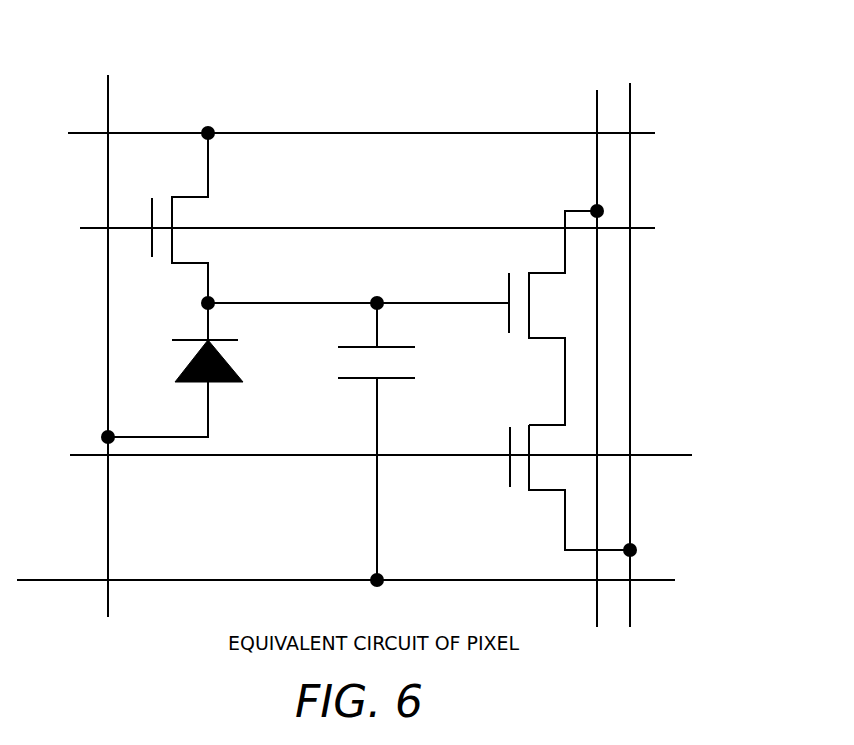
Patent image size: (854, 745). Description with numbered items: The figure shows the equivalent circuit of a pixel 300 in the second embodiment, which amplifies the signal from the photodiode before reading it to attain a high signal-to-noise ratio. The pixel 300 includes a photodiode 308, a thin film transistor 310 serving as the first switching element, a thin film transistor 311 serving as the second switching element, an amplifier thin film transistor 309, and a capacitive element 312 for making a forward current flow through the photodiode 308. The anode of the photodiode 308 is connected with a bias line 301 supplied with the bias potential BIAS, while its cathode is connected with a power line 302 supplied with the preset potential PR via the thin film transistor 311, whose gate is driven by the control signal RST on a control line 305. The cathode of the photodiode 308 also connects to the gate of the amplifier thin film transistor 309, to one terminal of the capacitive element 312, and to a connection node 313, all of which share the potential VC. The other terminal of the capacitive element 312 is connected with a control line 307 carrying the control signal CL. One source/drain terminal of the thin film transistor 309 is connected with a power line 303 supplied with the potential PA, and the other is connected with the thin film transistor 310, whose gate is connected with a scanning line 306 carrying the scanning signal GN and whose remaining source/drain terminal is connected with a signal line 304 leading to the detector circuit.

The pixel 300 is at (499, 60).
The bias line 301 is at (106, 120).
The power line for the reverse-bias voltage 302 is at (288, 133).
The power line 303 is at (597, 110).
The signal line 304 is at (630, 183).
The control line 305 is at (330, 227).
The scanning line 306 is at (240, 457).
The control line 307 is at (198, 582).
The photodiode 308 is at (235, 368).
The amplifier thin film transistor 309 is at (532, 315).
The thin film transistor 310 is at (529, 487).
The thin film transistor 311 is at (173, 223).
The capacitive element 312 is at (412, 378).
The connection node 313 is at (218, 298).